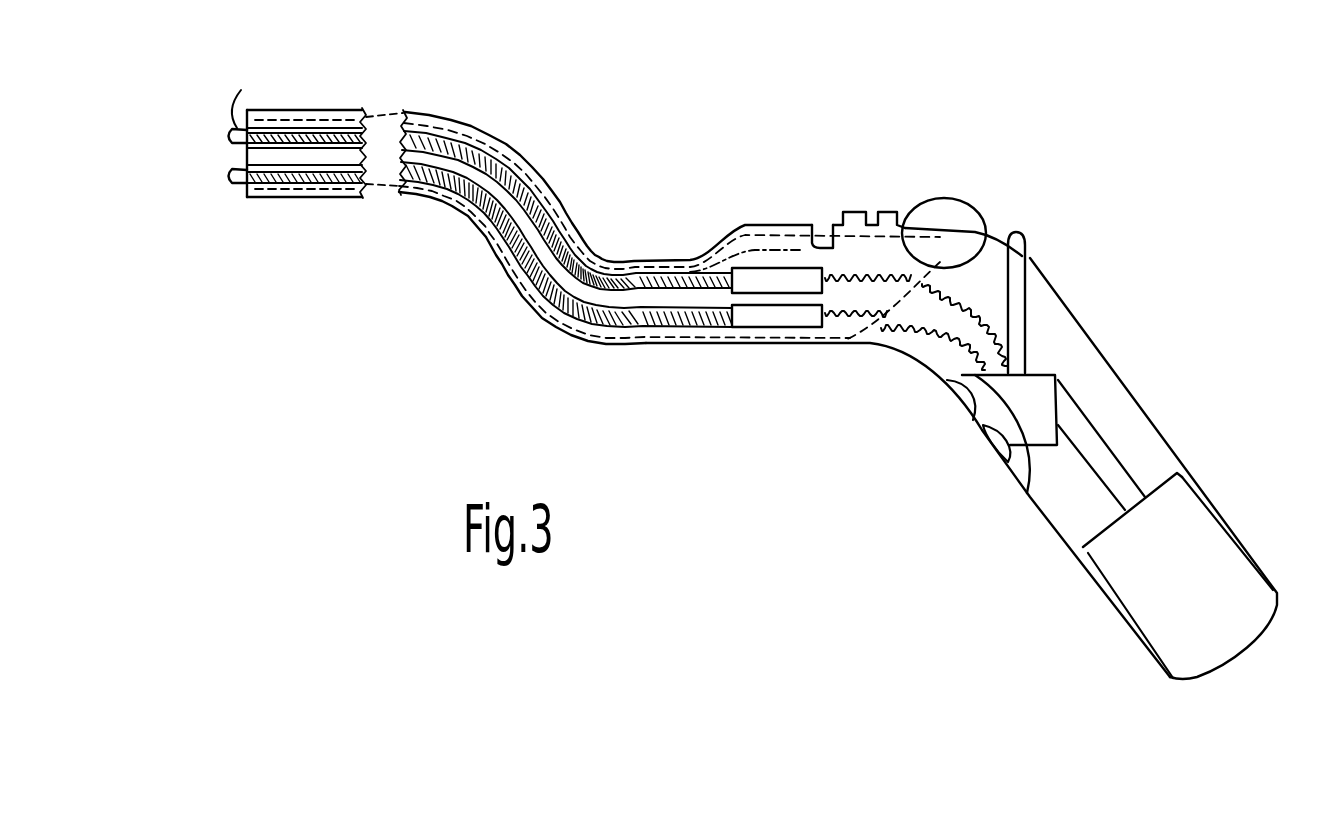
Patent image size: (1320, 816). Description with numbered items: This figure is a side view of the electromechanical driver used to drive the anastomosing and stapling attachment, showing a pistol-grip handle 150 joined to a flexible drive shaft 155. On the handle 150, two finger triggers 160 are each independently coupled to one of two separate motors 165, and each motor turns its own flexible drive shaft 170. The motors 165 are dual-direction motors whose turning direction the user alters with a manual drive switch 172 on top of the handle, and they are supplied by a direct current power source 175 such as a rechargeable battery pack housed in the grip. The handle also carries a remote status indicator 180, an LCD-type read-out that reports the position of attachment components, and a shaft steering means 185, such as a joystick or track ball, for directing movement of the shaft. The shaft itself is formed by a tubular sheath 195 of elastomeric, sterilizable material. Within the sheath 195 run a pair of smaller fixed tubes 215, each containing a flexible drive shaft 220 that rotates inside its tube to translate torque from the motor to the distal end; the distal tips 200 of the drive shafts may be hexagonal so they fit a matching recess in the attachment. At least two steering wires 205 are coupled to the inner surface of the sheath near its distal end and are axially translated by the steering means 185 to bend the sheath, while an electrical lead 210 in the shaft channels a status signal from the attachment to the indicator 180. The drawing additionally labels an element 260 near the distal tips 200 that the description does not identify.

The handle 150 is at (1095, 276).
The flexible drive shaft 155 is at (576, 141).
The finger triggers 160 is at (947, 400).
The motors 165 is at (772, 275).
The flexible drive shafts 170 is at (664, 272).
The manual drive switch 172 is at (1030, 233).
The power source 175 is at (1165, 529).
The remote status indicator 180 is at (850, 222).
The shaft steering means 185 is at (932, 213).
The tubular sheath 195 is at (579, 214).
The distal tips 200 is at (214, 131).
The steering wires 205 is at (886, 224).
The electrical lead 210 is at (814, 224).
The fixed tubes 215 is at (342, 130).
The flexible drive shaft 220 is at (287, 133).
The second tip 260 is at (225, 178).